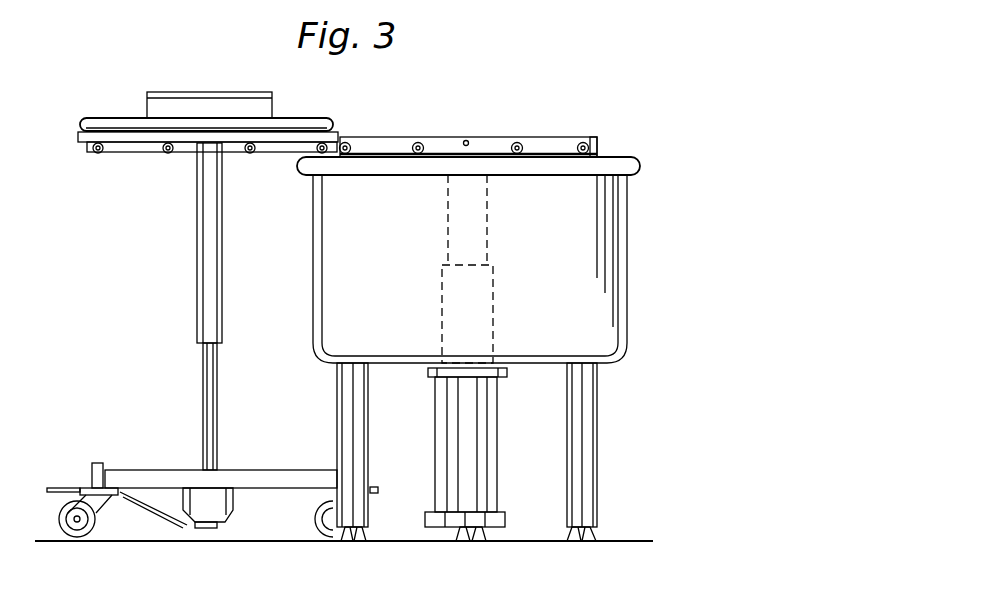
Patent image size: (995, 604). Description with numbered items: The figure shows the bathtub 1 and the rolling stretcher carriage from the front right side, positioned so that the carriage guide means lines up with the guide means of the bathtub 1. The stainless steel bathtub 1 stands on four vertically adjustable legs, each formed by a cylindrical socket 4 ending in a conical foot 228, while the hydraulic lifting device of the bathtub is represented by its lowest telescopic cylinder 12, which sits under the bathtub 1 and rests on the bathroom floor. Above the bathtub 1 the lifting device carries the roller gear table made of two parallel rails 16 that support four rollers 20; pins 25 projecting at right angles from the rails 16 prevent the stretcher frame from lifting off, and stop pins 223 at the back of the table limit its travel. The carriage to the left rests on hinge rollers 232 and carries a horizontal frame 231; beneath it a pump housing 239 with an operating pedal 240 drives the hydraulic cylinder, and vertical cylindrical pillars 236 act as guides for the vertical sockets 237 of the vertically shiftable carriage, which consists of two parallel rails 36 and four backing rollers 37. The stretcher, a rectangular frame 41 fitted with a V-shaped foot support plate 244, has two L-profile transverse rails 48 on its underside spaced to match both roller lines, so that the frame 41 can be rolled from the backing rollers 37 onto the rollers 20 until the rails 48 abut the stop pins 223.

The bathtub 1 is at (592, 240).
The cylindrical socket 4 is at (350, 447).
The lowest telescopic cylinder 12 is at (478, 447).
The parallel rails 16 is at (376, 141).
The rollers 20 is at (423, 141).
The pins 25 is at (468, 140).
The parallel rails 36 is at (133, 150).
The backing rollers 37 is at (164, 153).
The rectangular frame 41 is at (93, 123).
The transverse parallel rails 48 is at (300, 127).
The stop pins 223 is at (593, 137).
The conical foot 228 is at (348, 543).
The cart frame 231 is at (266, 470).
The hinge rollers 232 is at (60, 522).
The vertical cylindrical pillar 236 is at (208, 390).
The vertical sockets 237 is at (208, 272).
The pump housing 239 is at (210, 503).
The operating pedal 240 is at (62, 488).
The V-shaped plate 244 is at (262, 103).